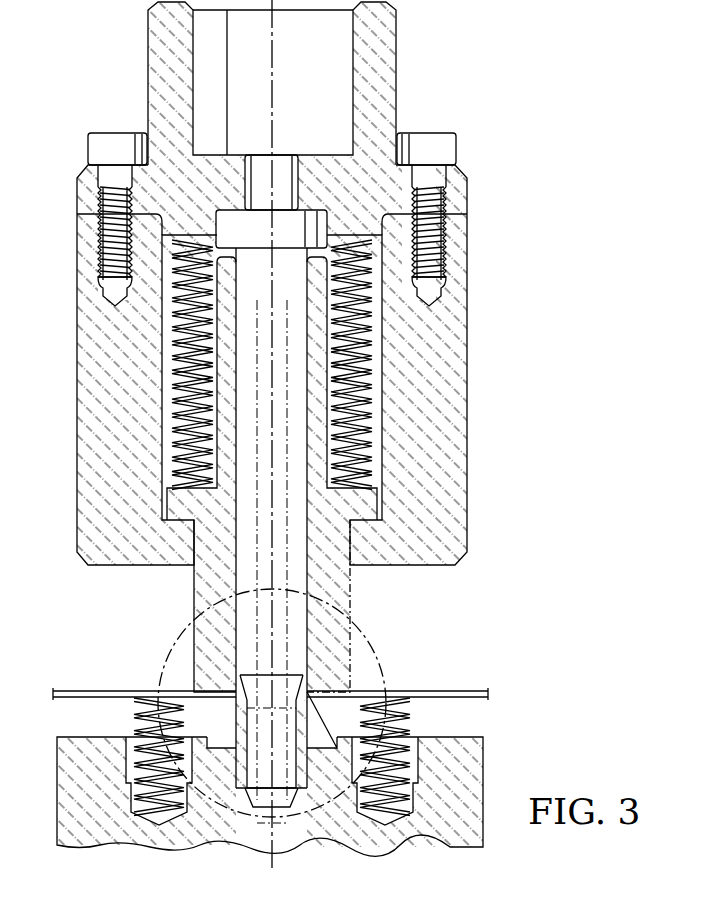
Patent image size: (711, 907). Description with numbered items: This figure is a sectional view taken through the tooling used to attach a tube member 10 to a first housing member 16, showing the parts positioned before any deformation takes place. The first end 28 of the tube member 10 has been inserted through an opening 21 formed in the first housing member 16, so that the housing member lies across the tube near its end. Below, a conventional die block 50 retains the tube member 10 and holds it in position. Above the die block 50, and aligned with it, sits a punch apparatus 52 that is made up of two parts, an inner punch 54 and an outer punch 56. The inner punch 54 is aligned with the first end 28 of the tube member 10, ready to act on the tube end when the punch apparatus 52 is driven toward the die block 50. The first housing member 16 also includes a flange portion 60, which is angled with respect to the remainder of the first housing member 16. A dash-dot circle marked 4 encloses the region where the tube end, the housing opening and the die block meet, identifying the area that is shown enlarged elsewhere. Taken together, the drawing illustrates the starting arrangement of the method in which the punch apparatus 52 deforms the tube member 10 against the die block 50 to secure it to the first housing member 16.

The detail view circle 4 is at (358, 632).
The tube member 10 is at (237, 825).
The first housing member 16 is at (460, 683).
The opening 21 is at (307, 694).
The first end 28 is at (237, 690).
The die block 50 is at (463, 823).
The punch apparatus 52 is at (455, 312).
The inner punch 54 is at (250, 566).
The outer punch 56 is at (333, 592).
The flange portion 60 is at (137, 732).